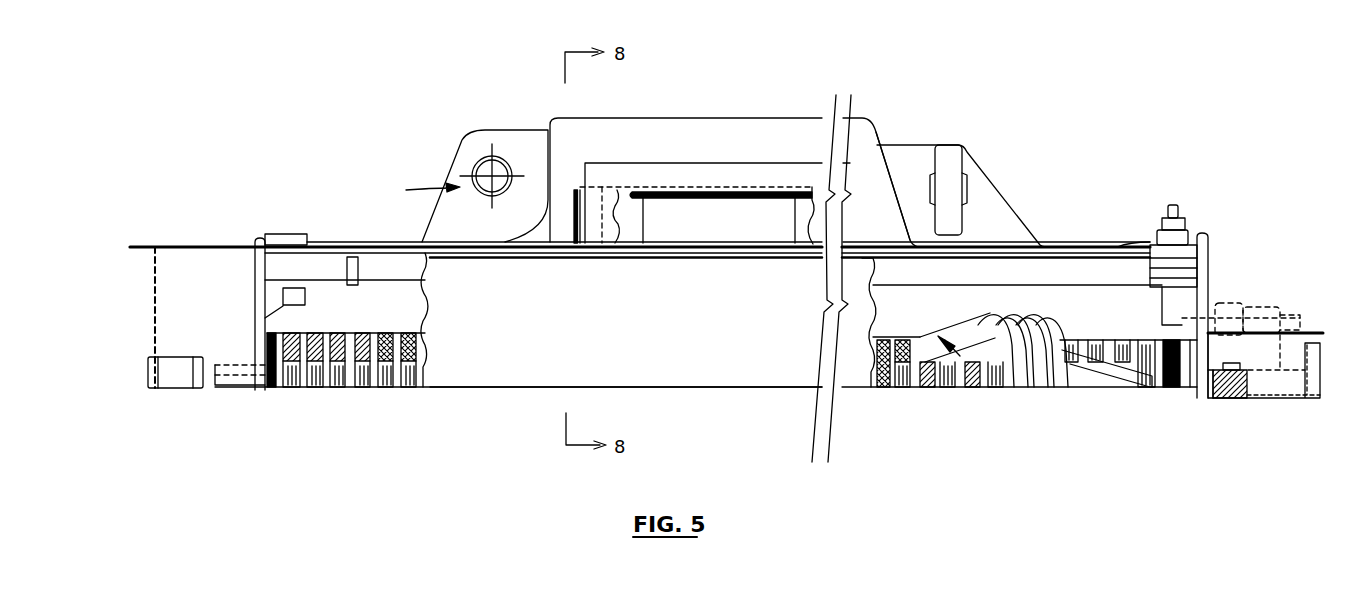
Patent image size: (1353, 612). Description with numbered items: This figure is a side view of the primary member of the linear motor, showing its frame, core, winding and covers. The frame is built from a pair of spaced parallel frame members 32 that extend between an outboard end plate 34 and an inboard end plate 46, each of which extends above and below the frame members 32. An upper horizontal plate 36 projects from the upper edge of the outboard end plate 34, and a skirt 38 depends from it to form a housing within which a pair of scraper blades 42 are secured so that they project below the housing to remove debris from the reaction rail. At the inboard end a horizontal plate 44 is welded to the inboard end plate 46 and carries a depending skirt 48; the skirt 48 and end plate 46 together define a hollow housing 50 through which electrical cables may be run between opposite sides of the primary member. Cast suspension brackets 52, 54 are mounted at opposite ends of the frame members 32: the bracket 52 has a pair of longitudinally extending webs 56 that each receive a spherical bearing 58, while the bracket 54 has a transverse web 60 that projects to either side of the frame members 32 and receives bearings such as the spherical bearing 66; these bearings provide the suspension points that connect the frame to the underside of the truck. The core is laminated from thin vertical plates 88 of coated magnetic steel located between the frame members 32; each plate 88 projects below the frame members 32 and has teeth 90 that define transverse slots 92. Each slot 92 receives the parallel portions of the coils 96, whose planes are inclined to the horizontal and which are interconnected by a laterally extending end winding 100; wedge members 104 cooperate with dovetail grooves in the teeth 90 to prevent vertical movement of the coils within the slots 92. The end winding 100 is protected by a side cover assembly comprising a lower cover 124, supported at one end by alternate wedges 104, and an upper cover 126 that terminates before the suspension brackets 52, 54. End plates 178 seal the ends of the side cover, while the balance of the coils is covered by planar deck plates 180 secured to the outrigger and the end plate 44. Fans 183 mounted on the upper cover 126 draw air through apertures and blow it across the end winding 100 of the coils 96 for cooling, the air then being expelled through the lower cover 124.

The frame members 32 is at (558, 130).
The outboard end plate 34 is at (260, 238).
The upper horizontal plate 36 is at (186, 246).
The skirt 38 is at (154, 312).
The scraper blades 42 is at (190, 392).
The horizontal plate 44 is at (1310, 320).
The inboard end plate 46 is at (1204, 232).
The skirt 48 is at (1325, 360).
The hollow housing 50 is at (1284, 360).
The suspension bracket 52 is at (420, 188).
The suspension bracket 54 is at (993, 197).
The longitudinally extending webs 56 is at (478, 140).
The spherical bearing 58 is at (478, 168).
The transverse web 60 is at (945, 150).
The spherical bearing 66 is at (924, 175).
The vertical plates 88 is at (265, 333).
The teeth 90 is at (280, 392).
The transverse slots 92 is at (302, 355).
The coils 96 is at (904, 392).
The end winding 100 is at (1010, 313).
The wedge member 104 is at (413, 390).
The lower cover 124 is at (626, 418).
The upper cover 126 is at (758, 166).
The end plates 178 is at (706, 338).
The deck plates 180 is at (372, 248).
The fans 183 is at (660, 214).